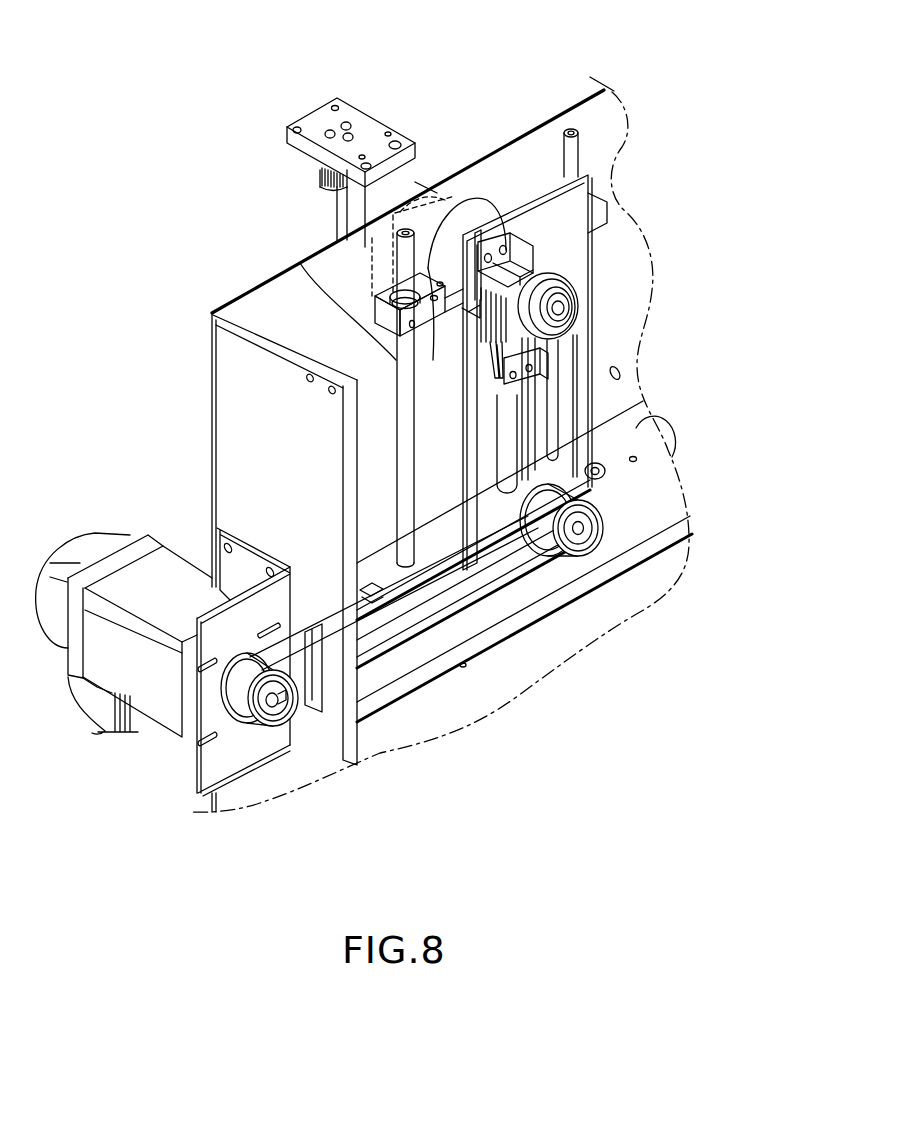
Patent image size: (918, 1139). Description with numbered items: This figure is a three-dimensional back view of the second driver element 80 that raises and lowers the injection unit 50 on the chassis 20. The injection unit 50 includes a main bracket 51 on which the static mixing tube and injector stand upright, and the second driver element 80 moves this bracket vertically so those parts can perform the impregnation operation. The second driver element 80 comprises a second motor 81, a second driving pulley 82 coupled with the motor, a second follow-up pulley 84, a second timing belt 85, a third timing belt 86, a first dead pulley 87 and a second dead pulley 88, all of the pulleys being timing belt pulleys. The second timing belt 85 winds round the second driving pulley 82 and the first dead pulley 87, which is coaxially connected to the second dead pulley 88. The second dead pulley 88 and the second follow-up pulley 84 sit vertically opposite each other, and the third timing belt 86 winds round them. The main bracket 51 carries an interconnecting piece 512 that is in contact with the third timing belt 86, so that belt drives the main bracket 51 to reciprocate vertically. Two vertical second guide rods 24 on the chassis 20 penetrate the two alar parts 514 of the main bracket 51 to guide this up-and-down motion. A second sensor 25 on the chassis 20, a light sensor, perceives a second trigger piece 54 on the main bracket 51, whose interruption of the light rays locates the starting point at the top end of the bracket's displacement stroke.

The chassis 20 is at (566, 93).
The second guide rods 24 is at (397, 362).
The second sensor 25 is at (550, 273).
The injection unit 50 is at (344, 187).
The main bracket 51 is at (388, 127).
The second trigger piece 54 is at (527, 260).
The second driver element 80 is at (189, 639).
The second motor 81 is at (165, 702).
The second driving pulley 82 is at (273, 727).
The second follow-up pulley 84 is at (580, 302).
The second timing belt 85 is at (410, 645).
The third timing belt 86 is at (573, 445).
The first dead pulley 87 is at (583, 547).
The second dead pulley 88 is at (520, 528).
The interconnecting piece 512 is at (543, 372).
The alar parts 514 is at (376, 303).